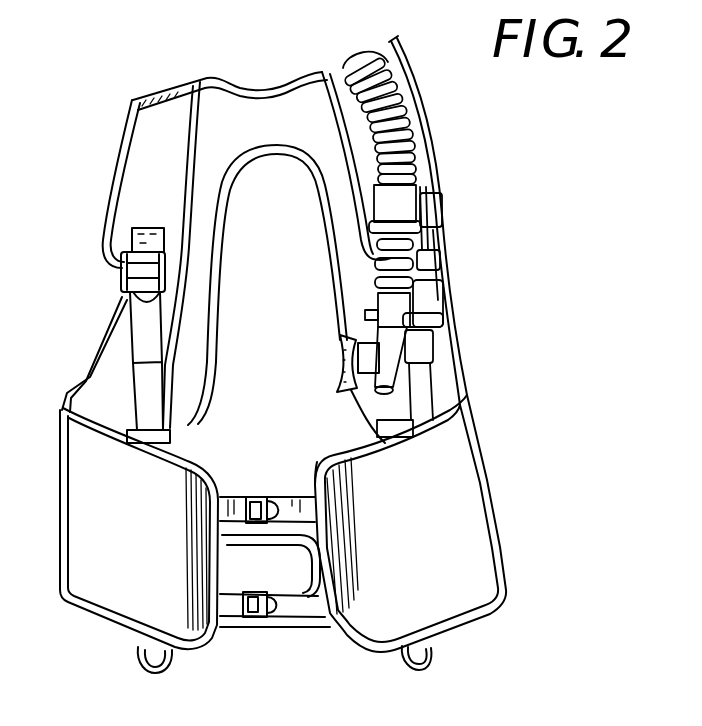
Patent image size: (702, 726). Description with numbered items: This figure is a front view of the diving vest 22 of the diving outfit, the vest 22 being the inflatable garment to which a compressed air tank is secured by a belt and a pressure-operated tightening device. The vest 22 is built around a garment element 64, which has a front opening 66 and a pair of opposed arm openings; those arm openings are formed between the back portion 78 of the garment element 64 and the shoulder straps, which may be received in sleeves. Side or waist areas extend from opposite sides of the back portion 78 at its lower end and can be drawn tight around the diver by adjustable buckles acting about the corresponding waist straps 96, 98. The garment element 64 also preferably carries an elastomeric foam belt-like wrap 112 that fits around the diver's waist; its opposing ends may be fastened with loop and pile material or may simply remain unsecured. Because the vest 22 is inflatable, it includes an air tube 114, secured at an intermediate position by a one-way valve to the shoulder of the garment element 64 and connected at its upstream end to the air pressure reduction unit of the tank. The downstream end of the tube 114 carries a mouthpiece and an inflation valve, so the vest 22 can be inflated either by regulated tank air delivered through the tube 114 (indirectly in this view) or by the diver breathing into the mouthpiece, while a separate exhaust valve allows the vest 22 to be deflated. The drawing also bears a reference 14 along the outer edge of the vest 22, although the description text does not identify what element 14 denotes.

The buoyancy compensator vest 14 is at (441, 142).
The vest 22 is at (458, 501).
The garment element 64 is at (112, 155).
The front opening 66 is at (273, 80).
The back portion 78 is at (278, 305).
The waist strap 96 is at (237, 500).
The waist strap 98 is at (291, 600).
The elastomeric foam belt-like wrap 112 is at (241, 576).
The air tube 114 is at (414, 163).